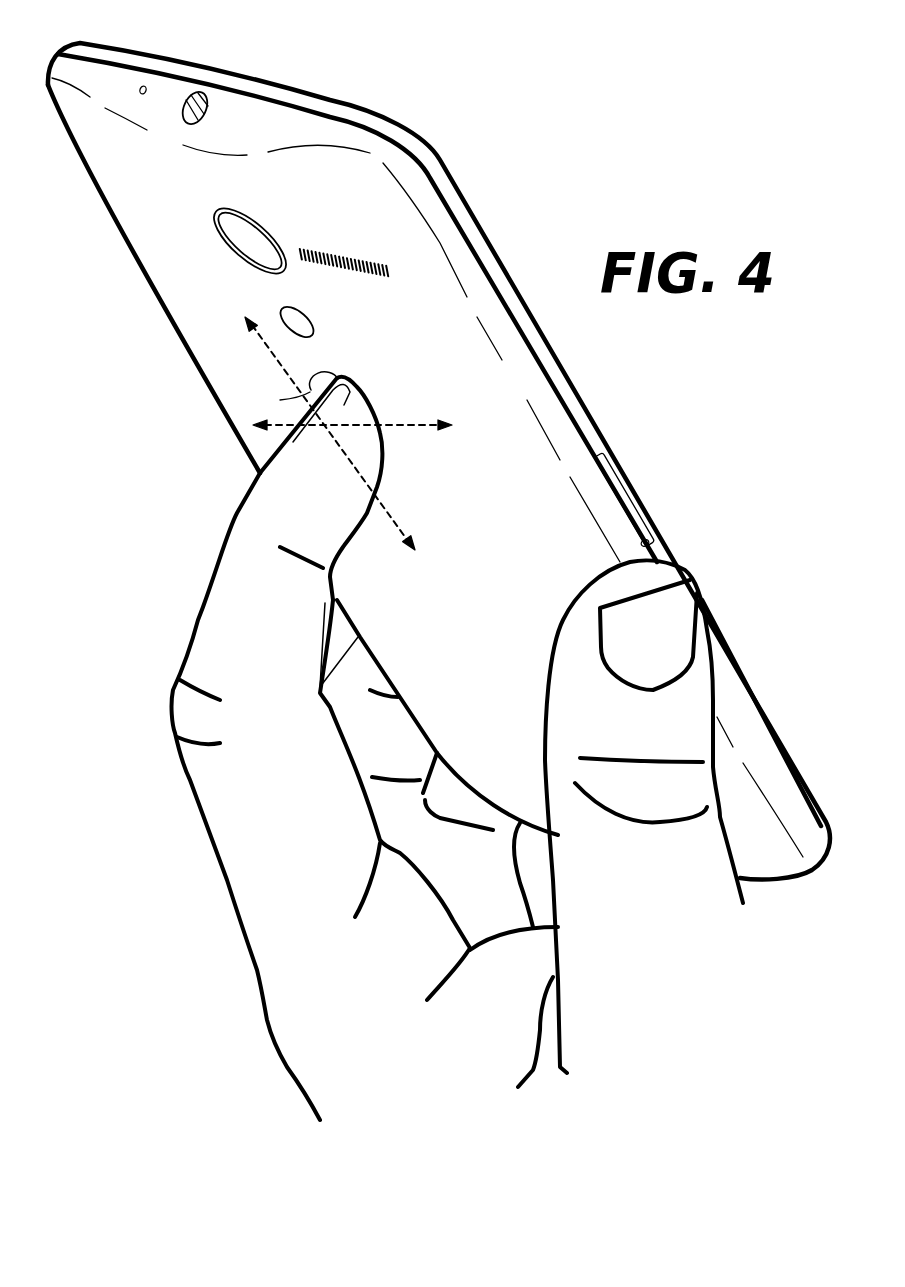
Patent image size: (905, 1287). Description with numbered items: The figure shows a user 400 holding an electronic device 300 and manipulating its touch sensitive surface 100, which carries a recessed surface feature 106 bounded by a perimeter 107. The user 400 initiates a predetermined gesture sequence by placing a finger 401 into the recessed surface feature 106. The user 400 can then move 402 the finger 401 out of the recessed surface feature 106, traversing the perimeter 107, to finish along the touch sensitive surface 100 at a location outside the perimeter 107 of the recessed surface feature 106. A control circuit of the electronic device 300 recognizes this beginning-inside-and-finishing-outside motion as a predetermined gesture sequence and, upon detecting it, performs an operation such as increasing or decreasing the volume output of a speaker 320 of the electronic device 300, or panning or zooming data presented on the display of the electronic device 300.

The touch sensitive surface 100 is at (280, 402).
The recessed surface feature 106 is at (313, 377).
The perimeter 107 is at (323, 370).
The electronic device 300 is at (504, 240).
The speaker 320 is at (323, 252).
The user 400 is at (353, 967).
The finger 401 is at (353, 447).
The move 402 is at (393, 523).